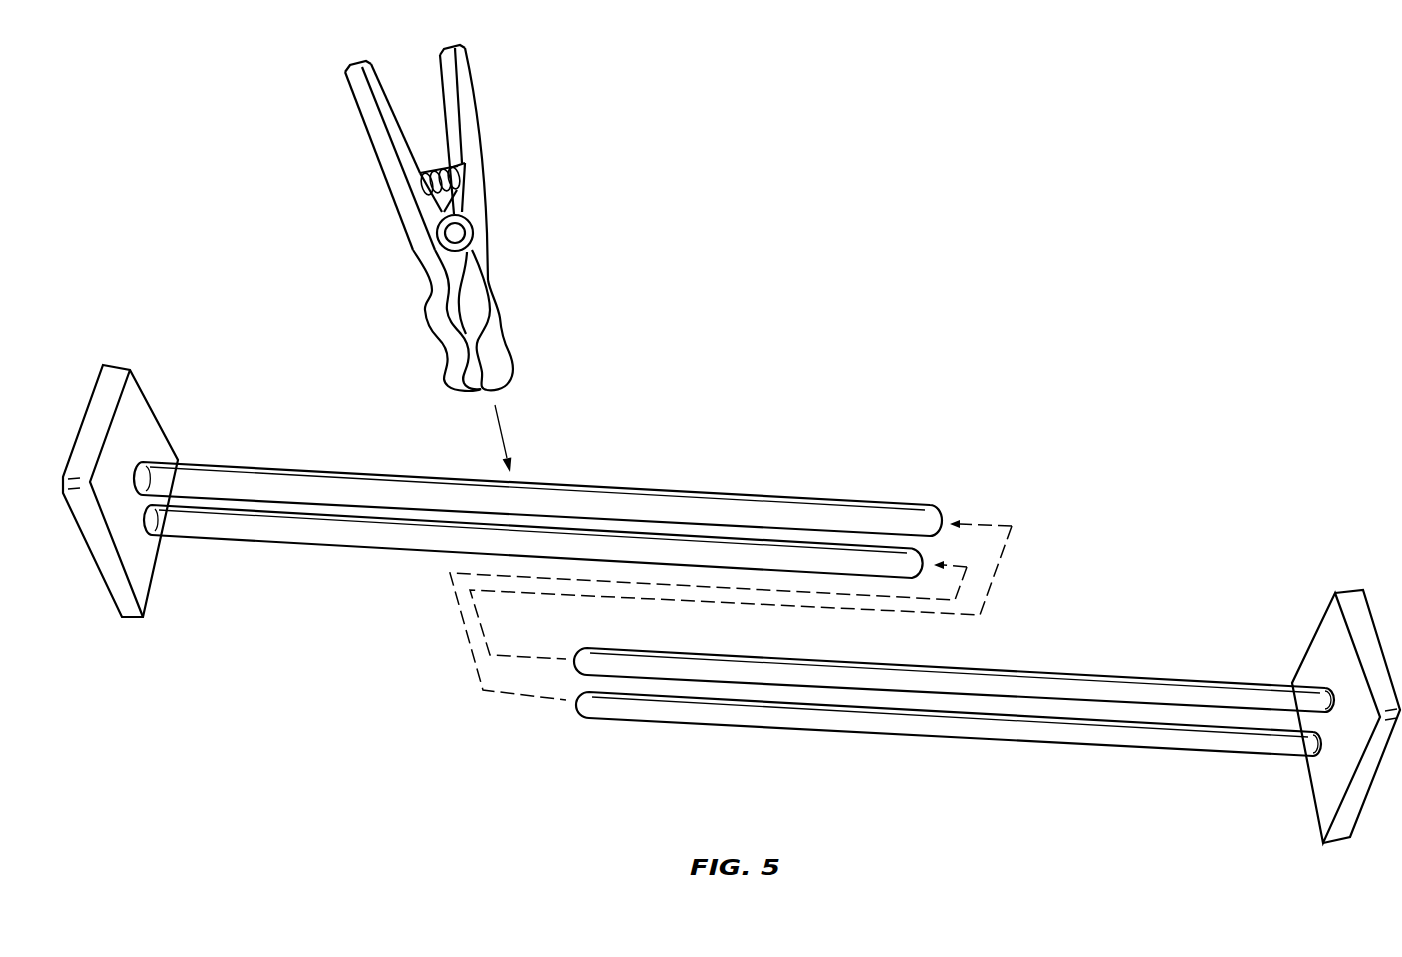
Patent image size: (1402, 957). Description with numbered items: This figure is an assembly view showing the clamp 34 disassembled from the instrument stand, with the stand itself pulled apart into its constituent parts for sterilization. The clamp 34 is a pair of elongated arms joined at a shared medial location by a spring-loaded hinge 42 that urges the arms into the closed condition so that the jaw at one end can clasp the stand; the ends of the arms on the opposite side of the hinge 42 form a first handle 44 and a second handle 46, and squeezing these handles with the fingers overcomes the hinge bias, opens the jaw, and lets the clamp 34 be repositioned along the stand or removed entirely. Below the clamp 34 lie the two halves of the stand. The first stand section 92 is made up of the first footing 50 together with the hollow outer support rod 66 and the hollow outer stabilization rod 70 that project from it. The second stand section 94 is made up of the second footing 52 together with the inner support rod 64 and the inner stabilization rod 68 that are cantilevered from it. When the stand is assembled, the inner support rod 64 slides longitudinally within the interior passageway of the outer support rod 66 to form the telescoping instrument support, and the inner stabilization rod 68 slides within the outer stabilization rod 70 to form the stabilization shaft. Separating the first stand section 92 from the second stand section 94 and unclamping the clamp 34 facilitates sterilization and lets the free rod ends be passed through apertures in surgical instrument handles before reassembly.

The clamp 34 is at (434, 257).
The spring-loaded hinge 42 is at (457, 236).
The first handle 44 is at (463, 82).
The second handle 46 is at (362, 100).
The first footing 50 is at (120, 588).
The second footing 52 is at (1330, 787).
The inner support rod 64 is at (847, 675).
The outer support rod 66 is at (688, 508).
The inner stabilization rod 68 is at (958, 723).
The outer stabilization rod 70 is at (743, 555).
The first stand section 92 is at (502, 530).
The second stand section 94 is at (987, 731).